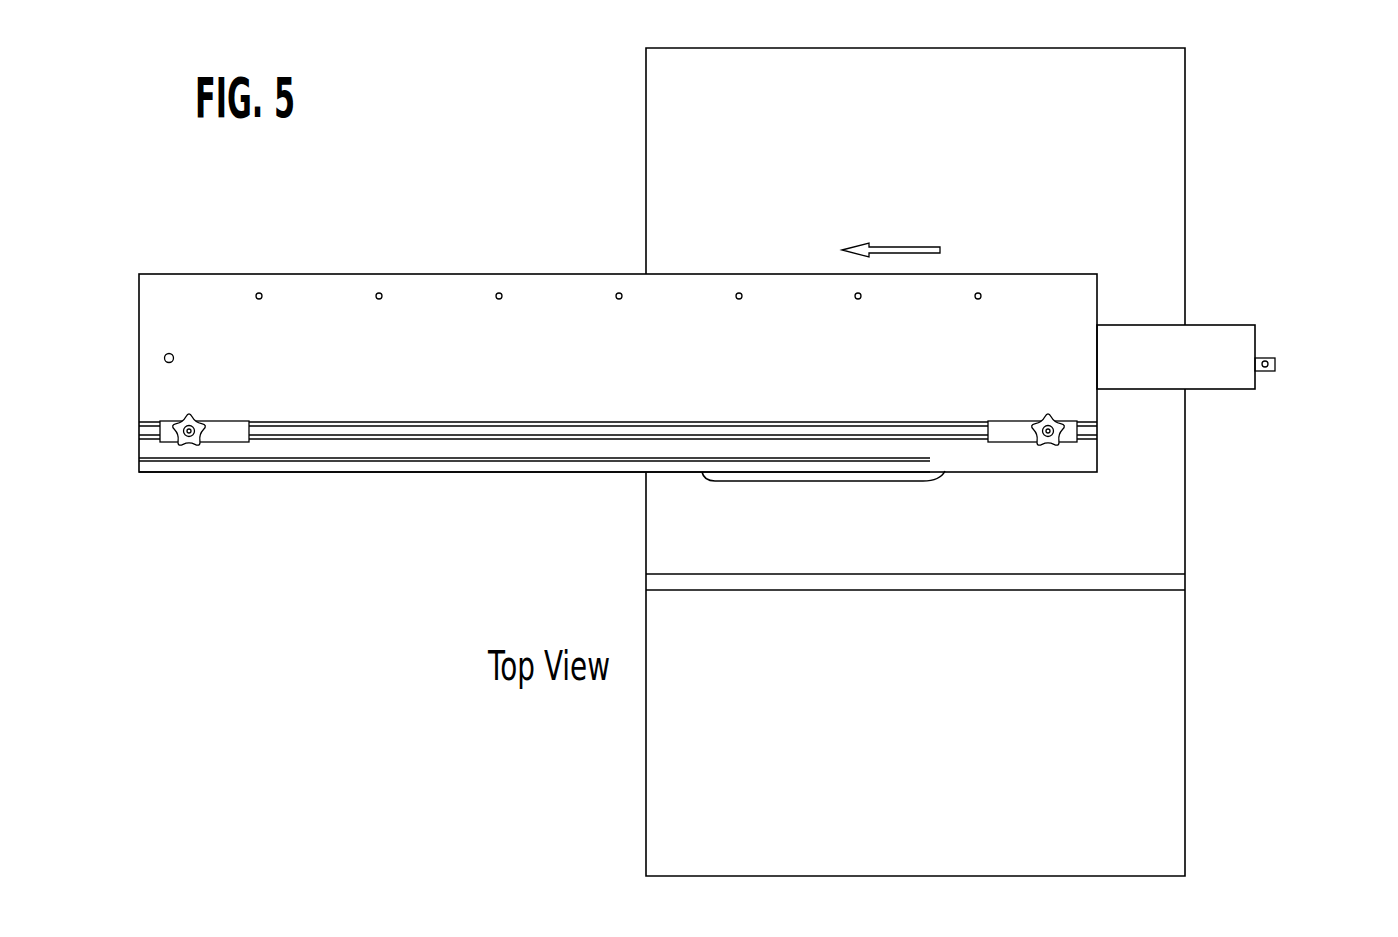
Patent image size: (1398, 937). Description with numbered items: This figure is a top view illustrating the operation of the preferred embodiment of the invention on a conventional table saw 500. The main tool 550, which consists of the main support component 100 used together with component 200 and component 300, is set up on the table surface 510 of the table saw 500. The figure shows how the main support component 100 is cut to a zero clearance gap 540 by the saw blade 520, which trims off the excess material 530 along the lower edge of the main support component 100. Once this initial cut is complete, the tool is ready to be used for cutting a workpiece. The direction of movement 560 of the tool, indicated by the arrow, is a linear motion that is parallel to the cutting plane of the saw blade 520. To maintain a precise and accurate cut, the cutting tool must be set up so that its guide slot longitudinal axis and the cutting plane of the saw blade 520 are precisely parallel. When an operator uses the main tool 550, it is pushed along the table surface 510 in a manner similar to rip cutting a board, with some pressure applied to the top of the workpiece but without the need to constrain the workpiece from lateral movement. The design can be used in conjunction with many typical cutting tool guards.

The main support component 100 is at (517, 274).
The component 200 is at (1216, 325).
The component 300 is at (1268, 355).
The table saw 500 is at (1185, 442).
The table surface 510 is at (1149, 676).
The saw blade 520 is at (930, 458).
The excess material 530 is at (601, 470).
The zero clearance gap 540 is at (747, 460).
The main tool 550 is at (1120, 301).
The direction of movement 560 is at (913, 233).